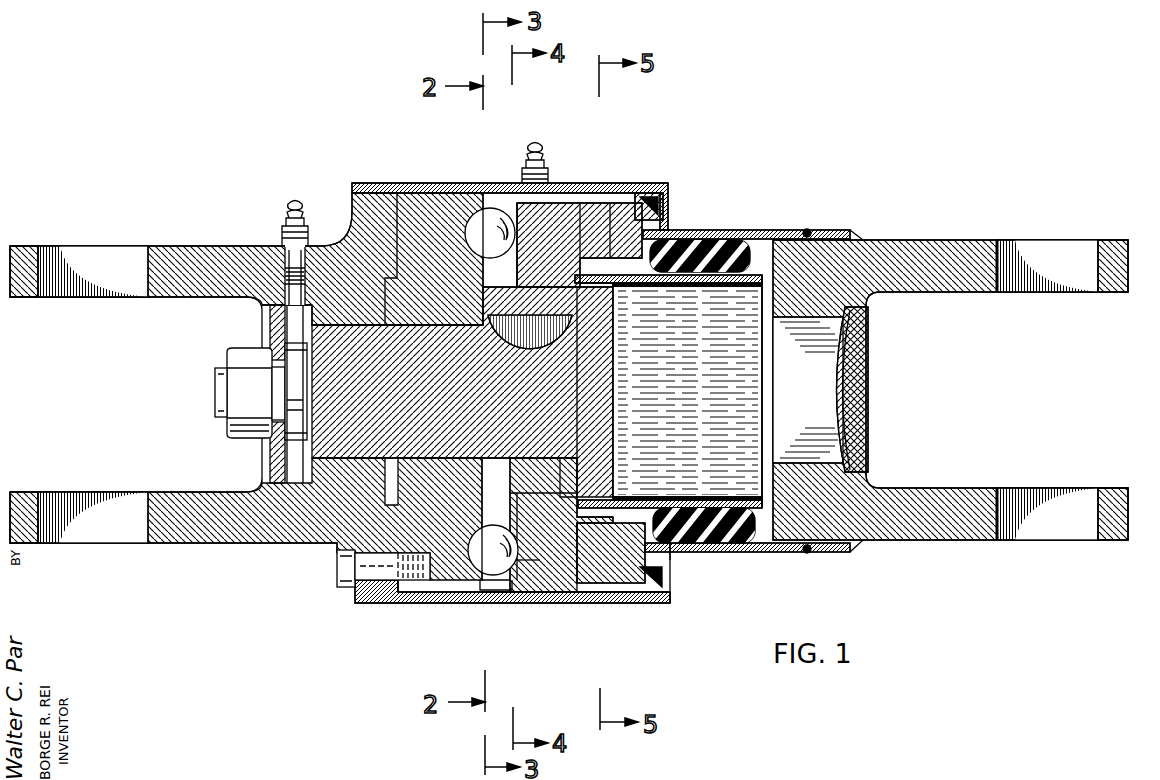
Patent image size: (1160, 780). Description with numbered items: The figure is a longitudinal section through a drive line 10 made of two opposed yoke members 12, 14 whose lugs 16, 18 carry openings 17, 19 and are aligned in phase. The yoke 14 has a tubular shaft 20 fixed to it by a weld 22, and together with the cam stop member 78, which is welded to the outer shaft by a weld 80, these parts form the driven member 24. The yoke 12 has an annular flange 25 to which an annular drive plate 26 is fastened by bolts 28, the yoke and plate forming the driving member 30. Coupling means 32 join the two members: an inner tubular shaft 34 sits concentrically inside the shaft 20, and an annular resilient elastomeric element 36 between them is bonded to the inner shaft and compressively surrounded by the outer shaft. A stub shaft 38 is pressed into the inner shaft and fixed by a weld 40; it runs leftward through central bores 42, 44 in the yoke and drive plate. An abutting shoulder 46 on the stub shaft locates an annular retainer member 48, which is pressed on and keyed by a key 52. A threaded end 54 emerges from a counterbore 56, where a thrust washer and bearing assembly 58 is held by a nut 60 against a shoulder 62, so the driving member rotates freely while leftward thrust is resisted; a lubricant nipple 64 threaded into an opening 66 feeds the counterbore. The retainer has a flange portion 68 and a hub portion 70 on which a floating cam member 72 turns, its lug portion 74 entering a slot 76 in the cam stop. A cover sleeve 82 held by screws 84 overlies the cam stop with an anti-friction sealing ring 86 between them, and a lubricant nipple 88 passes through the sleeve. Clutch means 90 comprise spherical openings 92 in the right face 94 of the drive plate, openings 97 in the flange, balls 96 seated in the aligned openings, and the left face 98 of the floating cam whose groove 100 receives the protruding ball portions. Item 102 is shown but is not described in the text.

The drive line 10 is at (770, 173).
The yoke member 12 is at (246, 386).
The yoke member 14 is at (957, 375).
The lug 16 is at (12, 250).
The opening 17 is at (50, 256).
The lug 18 is at (1110, 248).
The opening 19 is at (996, 285).
The tubular shaft 20 is at (712, 234).
The weld 22 is at (805, 553).
The driven member 24 is at (822, 228).
The annular flange 25 is at (372, 603).
The annular drive plate 26 is at (460, 193).
The bolts 28 is at (345, 592).
The driving member 30 is at (364, 319).
The coupling means 32 is at (668, 391).
The tubular shaft 34 is at (695, 283).
The annular resilient elastomeric element 36 is at (711, 391).
The stub shaft 38 is at (463, 355).
The weld 40 is at (598, 490).
The central bore 42 is at (362, 326).
The central bore 44 is at (417, 326).
The abutting shoulder 46 is at (583, 283).
The annular retainer member 48 is at (482, 326).
The key 52 is at (520, 348).
The threaded end 54 is at (228, 410).
The counterbore 56 is at (263, 312).
The thrust washer and bearing assembly 58 is at (306, 352).
The nut 60 is at (244, 442).
The shoulder 62 is at (303, 305).
The lubricant nipple 64 is at (290, 198).
The opening 66 is at (287, 290).
The annular flange portion 68 is at (482, 272).
The hub portion 70 is at (580, 300).
The floating cam member 72 is at (579, 245).
The lug portion 74 is at (596, 200).
The circumferentially elongated slot 76 is at (633, 200).
The cam stop member 78 is at (636, 283).
The weld 80 is at (690, 555).
The cover sleeve 82 is at (512, 609).
The screws 84 is at (432, 178).
The anti-friction sealing ring 86 is at (640, 568).
The lubricant nipple 88 is at (543, 140).
The clutch means 90 is at (494, 603).
The spherical camming and engaging openings 92 is at (468, 550).
The right face 94 is at (493, 463).
The ball 96 is at (468, 533).
The openings 97 is at (510, 585).
The left face 98 is at (512, 497).
The circumferentially extending groove 100 is at (518, 566).
The retainer lip 102 is at (522, 515).